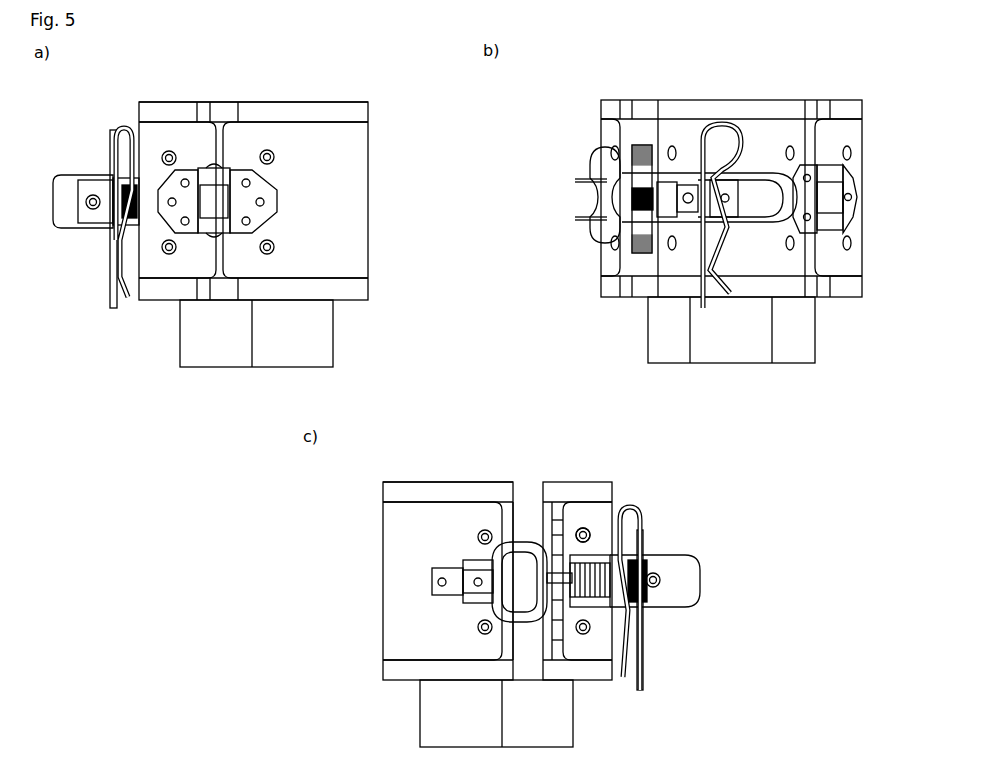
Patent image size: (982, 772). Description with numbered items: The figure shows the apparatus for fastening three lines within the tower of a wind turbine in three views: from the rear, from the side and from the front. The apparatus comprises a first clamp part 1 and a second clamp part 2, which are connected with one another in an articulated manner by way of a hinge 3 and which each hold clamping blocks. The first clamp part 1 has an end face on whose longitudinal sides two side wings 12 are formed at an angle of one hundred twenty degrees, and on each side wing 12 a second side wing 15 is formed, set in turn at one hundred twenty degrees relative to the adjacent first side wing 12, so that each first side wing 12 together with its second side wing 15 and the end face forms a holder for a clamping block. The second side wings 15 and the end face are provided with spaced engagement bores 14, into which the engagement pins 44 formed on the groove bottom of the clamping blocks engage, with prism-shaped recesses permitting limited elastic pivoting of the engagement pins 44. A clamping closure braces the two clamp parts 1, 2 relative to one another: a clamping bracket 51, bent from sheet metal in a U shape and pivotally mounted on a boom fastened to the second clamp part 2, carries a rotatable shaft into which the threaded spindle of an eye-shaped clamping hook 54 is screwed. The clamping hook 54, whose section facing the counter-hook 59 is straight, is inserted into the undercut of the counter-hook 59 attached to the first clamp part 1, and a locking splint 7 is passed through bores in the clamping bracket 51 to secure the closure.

The first clamp part 1 is at (878, 128).
The second clamp part 2 is at (788, 262).
The hinge 3 is at (205, 232).
The locking splint 7 is at (103, 308).
The side wing 12 is at (357, 203).
The engagement bore 14 is at (598, 535).
The second side wing 15 is at (266, 130).
The engagement pin 44 is at (585, 522).
The clamping bracket 51 is at (73, 178).
The clamping hook 54 is at (528, 530).
The counter-hook 59 is at (460, 590).